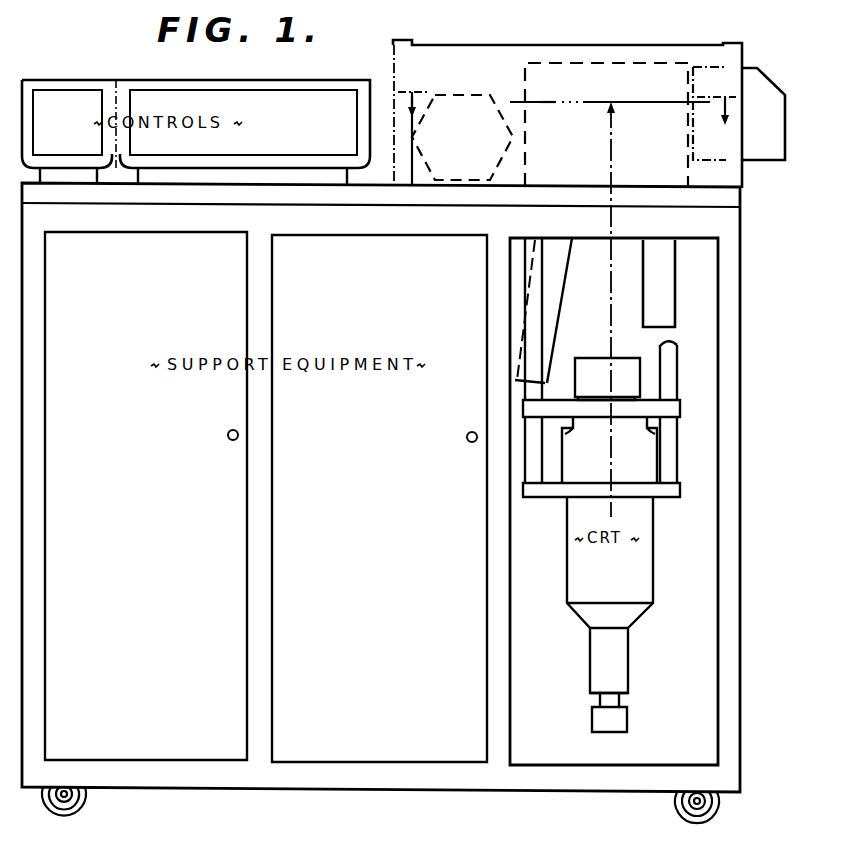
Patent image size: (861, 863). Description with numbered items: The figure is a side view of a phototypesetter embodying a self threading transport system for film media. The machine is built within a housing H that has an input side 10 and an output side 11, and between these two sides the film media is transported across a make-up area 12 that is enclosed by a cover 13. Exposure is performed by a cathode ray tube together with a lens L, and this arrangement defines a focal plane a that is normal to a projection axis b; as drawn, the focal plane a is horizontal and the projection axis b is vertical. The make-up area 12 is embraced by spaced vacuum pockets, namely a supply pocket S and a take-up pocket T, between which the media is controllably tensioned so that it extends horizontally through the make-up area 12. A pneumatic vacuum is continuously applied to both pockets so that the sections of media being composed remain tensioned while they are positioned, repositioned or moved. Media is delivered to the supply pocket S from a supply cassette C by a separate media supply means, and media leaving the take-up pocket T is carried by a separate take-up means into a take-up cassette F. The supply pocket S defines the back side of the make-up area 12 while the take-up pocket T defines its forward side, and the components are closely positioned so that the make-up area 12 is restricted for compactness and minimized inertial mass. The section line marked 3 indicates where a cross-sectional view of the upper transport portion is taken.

The input side 10 is at (421, 80).
The output side 11 is at (708, 77).
The make-up area 12 is at (627, 88).
The cover 13 is at (582, 52).
The section line 3- 3 is at (569, 95).
The supply cassette C is at (491, 84).
The take-up cassette F is at (789, 89).
The focal plane a is at (548, 104).
The projection axis b is at (613, 165).
The supply pocket S is at (560, 330).
The take-up pocket T is at (678, 312).
The lens L is at (645, 378).
The housing H is at (192, 506).